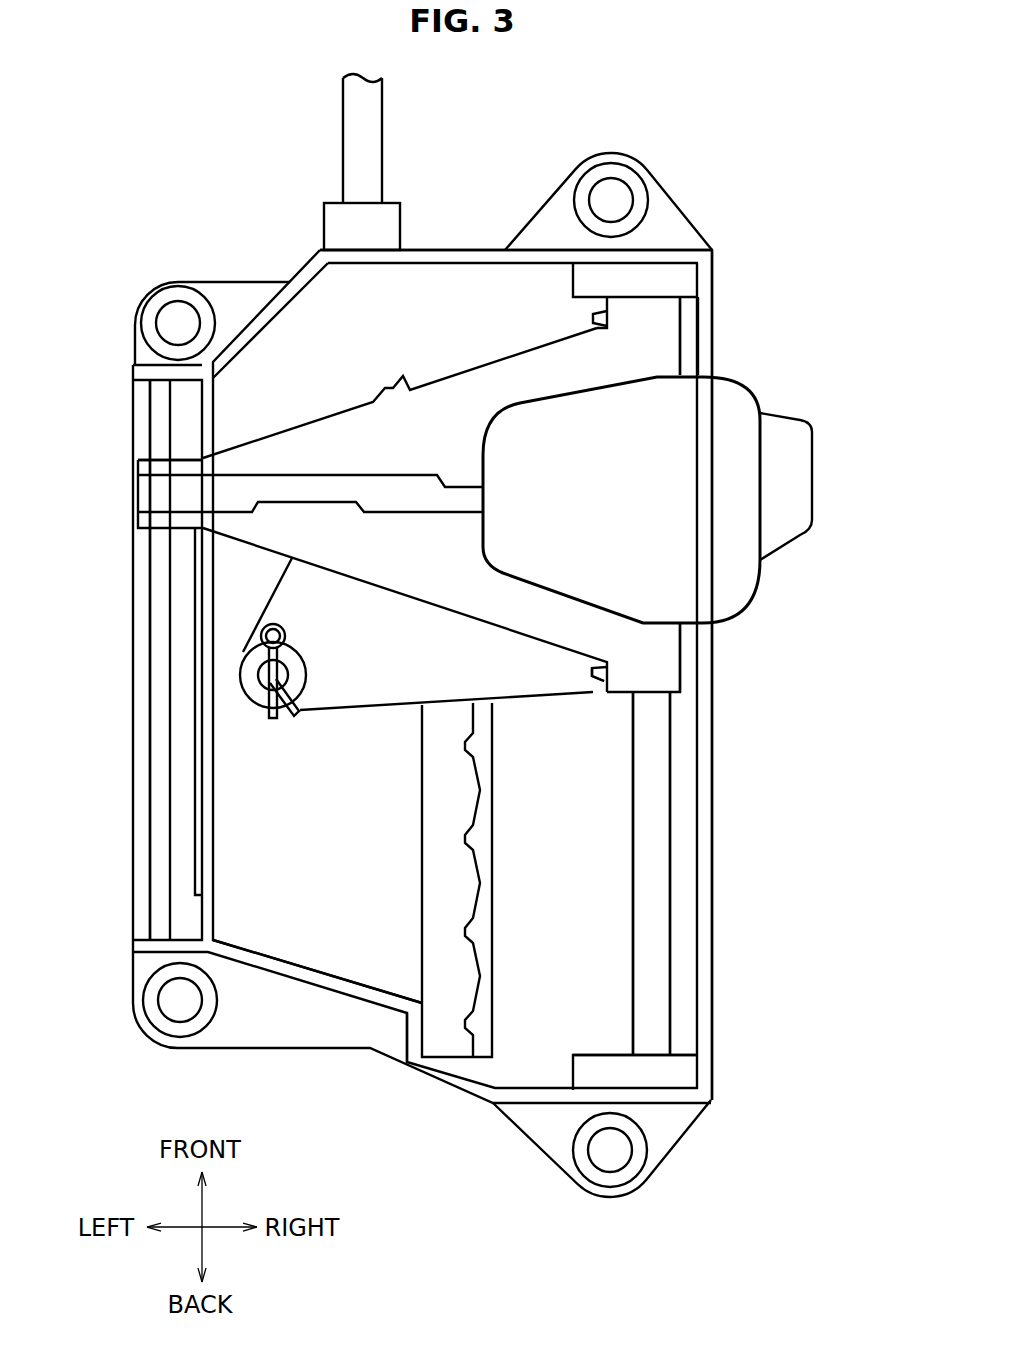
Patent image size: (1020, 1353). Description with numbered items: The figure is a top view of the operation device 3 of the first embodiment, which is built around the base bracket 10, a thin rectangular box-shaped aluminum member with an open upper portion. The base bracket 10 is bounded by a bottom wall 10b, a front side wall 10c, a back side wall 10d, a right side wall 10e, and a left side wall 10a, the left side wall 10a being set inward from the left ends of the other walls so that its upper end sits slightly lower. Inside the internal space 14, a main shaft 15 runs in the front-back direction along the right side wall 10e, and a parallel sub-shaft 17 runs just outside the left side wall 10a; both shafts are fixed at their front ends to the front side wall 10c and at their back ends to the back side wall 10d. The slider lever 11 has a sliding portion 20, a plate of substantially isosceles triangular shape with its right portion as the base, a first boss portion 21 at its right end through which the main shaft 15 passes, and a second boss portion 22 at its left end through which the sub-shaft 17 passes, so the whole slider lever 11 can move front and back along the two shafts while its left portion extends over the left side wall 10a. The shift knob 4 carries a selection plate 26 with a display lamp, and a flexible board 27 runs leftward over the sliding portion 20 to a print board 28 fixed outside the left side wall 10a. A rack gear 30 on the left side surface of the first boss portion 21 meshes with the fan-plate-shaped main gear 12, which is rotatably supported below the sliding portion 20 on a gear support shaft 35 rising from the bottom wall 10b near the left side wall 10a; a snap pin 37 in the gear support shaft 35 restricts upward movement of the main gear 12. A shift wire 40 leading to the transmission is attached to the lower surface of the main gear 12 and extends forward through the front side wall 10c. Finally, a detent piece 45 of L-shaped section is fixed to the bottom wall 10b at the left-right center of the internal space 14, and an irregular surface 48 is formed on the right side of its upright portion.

The operation device 3 is at (752, 163).
The shift knob 4 is at (718, 412).
The base bracket 10 is at (714, 273).
The left side wall 10a is at (200, 910).
The bottom wall 10b is at (283, 920).
The front side wall 10c is at (444, 246).
The back side wall 10d is at (370, 1003).
The right side wall 10e is at (713, 886).
The slider lever 11 is at (653, 312).
The main gear 12 is at (292, 592).
The internal space 14 is at (608, 963).
The main shaft 15 is at (658, 812).
The sub-shaft 17 is at (148, 785).
The sliding portion 20 is at (582, 358).
The first boss portion 21 is at (652, 682).
The second boss portion 22 is at (155, 522).
The selection plate 26 is at (790, 458).
The flexible board 27 is at (177, 492).
The print board 28 is at (195, 832).
The rack gear 30 is at (597, 693).
The gear support shaft 35 is at (273, 673).
The snap pin 37 is at (267, 716).
The shift wire 40 is at (343, 100).
The detent piece 45 is at (447, 1035).
The irregular surface 48 is at (473, 1025).